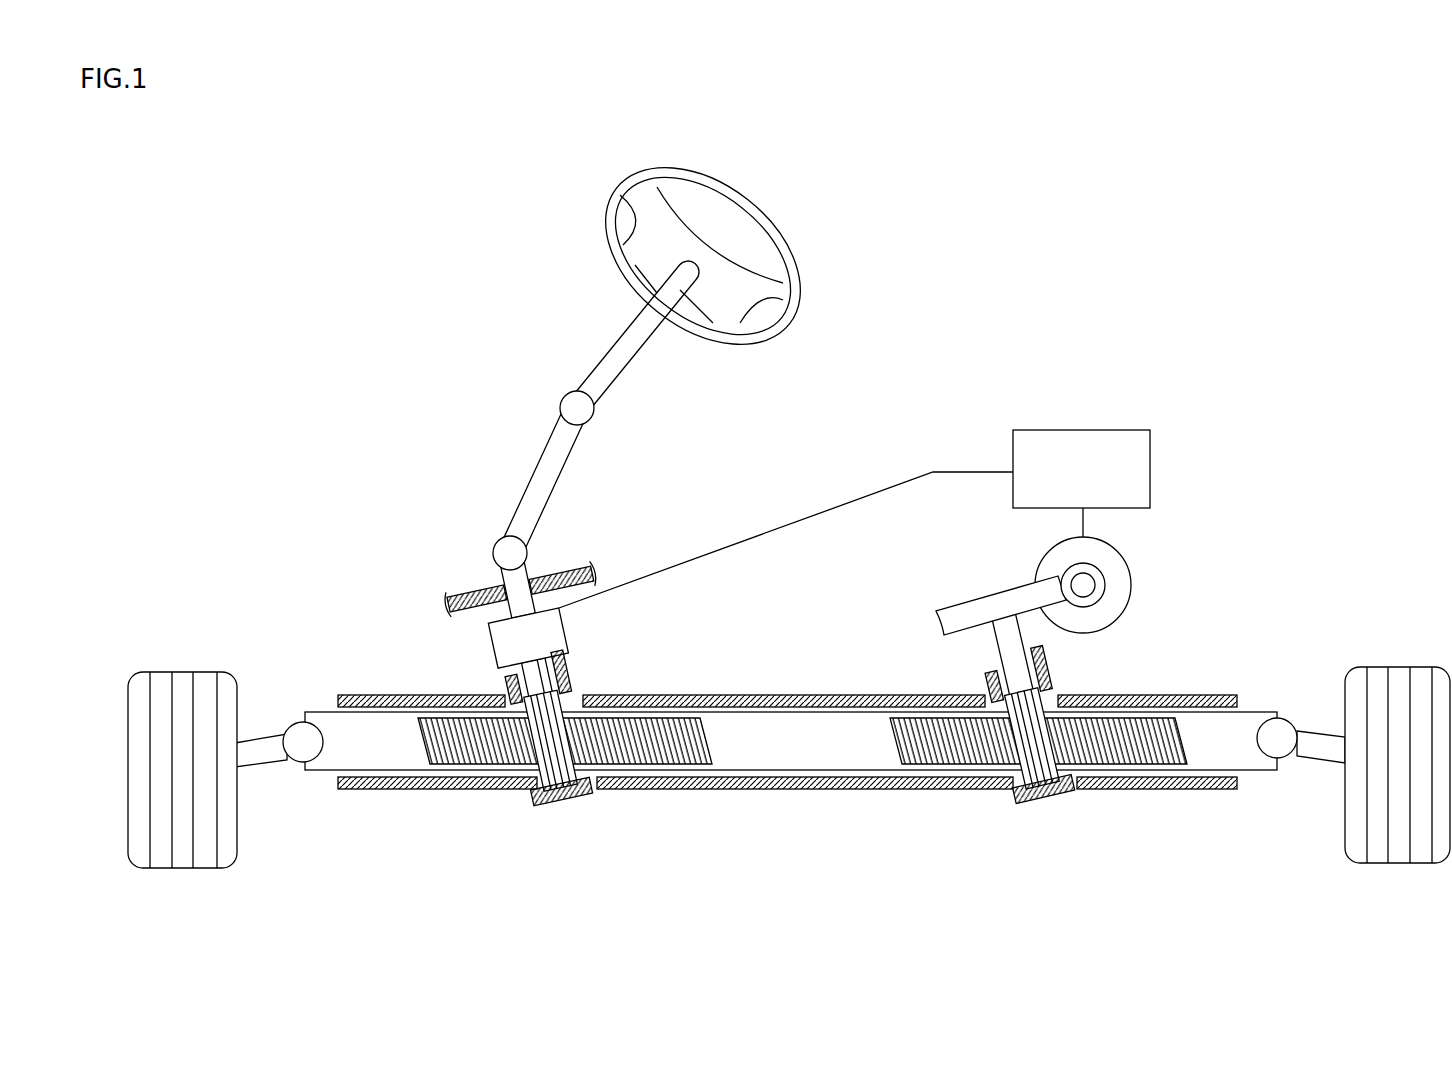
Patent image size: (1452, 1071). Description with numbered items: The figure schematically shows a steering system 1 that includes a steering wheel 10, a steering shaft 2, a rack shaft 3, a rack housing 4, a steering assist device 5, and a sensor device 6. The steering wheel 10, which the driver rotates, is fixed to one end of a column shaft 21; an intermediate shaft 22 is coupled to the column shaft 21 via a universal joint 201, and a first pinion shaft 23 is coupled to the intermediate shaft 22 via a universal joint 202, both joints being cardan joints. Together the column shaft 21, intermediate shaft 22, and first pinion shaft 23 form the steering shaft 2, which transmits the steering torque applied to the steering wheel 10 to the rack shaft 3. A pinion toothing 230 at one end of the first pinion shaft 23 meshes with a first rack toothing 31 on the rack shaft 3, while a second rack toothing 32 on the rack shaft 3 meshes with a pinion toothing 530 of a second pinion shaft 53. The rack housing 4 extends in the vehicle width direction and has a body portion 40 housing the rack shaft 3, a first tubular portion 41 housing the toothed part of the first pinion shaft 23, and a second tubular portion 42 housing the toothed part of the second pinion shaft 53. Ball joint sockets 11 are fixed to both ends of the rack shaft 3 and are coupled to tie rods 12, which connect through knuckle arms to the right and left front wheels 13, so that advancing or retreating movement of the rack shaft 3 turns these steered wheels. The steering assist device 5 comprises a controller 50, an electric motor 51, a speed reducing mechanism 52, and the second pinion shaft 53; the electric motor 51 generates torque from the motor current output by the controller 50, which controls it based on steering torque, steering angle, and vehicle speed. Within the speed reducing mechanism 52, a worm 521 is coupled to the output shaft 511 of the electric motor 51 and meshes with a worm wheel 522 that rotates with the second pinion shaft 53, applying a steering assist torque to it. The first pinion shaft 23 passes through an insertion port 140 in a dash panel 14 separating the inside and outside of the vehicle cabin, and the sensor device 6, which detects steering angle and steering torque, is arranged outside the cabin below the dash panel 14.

The steering system 1 is at (503, 305).
The steering wheel 10 is at (763, 215).
The steering shaft 2 is at (599, 409).
The column shaft 21 is at (610, 395).
The intermediate shaft 22 is at (557, 478).
The first pinion shaft 23 is at (530, 567).
The universal joint 201 is at (562, 398).
The universal joint 202 is at (496, 543).
The pinion toothing 230 is at (557, 802).
The rack shaft 3 is at (791, 781).
The first rack toothing 31 is at (482, 750).
The second rack toothing 32 is at (950, 750).
The rack housing 4 is at (787, 713).
The body portion 40 is at (700, 694).
The first tubular portion 41 is at (582, 676).
The second tubular portion 42 is at (985, 681).
The ball joint socket 11 is at (295, 722).
The tie rod 12 is at (265, 767).
The front wheel 13 is at (180, 672).
The dash panel 14 is at (471, 612).
The insertion port 140 is at (493, 582).
The sensor device 6 is at (570, 635).
The steering assist device 5 is at (911, 617).
The controller 50 is at (1103, 430).
The electric motor 51 is at (1127, 563).
The output shaft 511 is at (1083, 585).
The speed reducing mechanism 52 is at (998, 574).
The worm 521 is at (1062, 570).
The worm wheel 522 is at (1018, 590).
The second pinion shaft 53 is at (1025, 640).
The pinion toothing 530 is at (1022, 800).